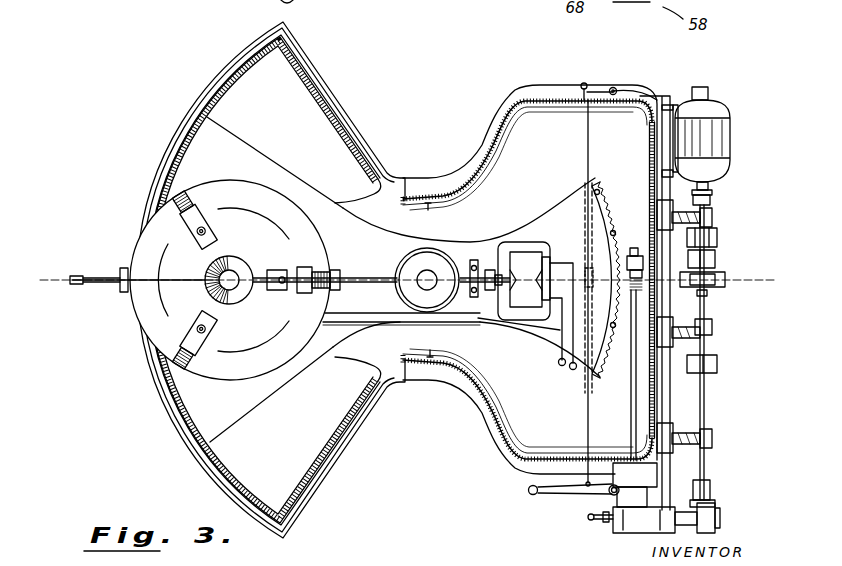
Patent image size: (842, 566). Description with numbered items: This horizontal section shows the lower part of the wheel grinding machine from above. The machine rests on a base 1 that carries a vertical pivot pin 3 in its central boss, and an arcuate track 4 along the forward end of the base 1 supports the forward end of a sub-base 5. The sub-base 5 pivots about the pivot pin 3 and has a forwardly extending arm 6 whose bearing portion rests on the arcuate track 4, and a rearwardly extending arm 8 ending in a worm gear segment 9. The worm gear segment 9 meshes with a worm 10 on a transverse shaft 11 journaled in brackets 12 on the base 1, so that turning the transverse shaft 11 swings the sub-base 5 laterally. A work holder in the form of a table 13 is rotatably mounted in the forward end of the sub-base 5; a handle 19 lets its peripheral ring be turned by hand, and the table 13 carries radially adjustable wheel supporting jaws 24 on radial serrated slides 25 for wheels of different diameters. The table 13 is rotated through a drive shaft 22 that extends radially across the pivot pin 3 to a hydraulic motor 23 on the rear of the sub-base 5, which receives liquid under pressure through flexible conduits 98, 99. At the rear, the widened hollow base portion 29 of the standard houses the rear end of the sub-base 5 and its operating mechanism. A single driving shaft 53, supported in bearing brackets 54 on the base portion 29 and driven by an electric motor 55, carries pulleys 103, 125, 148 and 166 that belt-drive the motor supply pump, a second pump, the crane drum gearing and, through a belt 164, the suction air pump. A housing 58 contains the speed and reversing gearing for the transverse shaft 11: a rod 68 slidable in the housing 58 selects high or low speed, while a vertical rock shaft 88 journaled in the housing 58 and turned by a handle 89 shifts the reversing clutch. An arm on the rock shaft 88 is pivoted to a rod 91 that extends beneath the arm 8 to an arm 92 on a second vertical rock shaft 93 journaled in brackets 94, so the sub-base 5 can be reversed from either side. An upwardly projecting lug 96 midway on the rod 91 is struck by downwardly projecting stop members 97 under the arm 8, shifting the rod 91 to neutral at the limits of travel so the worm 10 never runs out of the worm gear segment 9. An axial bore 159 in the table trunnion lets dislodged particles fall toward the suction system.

The base 1 is at (398, 390).
The vertical pivot pin 3 is at (430, 272).
The arcuate track 4 is at (300, 63).
The sub-base 5 is at (477, 243).
The forwardly extending arm 6 is at (288, 187).
The rearwardly extending arm 8 is at (533, 223).
The worm gear segment 9 is at (610, 193).
The worm 10 is at (650, 212).
The transverse shaft 11 is at (633, 350).
The brackets 12 is at (630, 247).
The table 13 is at (147, 320).
The handle 19 is at (88, 277).
The drive shaft 22 is at (357, 277).
The hydraulic motor 23 is at (477, 322).
The wheel supporting jaws 24 is at (197, 210).
The radial serrated slides 25 is at (190, 195).
The hollow base portion 29 is at (547, 97).
The driving shaft 53 is at (712, 322).
The bearing brackets 54 is at (710, 218).
The electric motor 55 is at (730, 137).
The housing 58 is at (630, 527).
The rod 68 is at (597, 520).
The vertical rock shaft 88 is at (637, 483).
The handle 89 is at (560, 497).
The rod 91 is at (590, 443).
The arm 92 is at (603, 97).
The vertical rock shaft 93 is at (613, 87).
The brackets 94 is at (622, 92).
The lug 96 is at (580, 263).
The stop members 97 is at (570, 203).
The conduit 98 is at (563, 350).
The conduit 99 is at (557, 323).
The pulley 103 is at (717, 367).
The pulley 125 is at (718, 237).
The pulley 148 is at (717, 258).
The axial bore 159 is at (240, 273).
The belt 164 is at (720, 295).
The pulley 166 is at (702, 296).